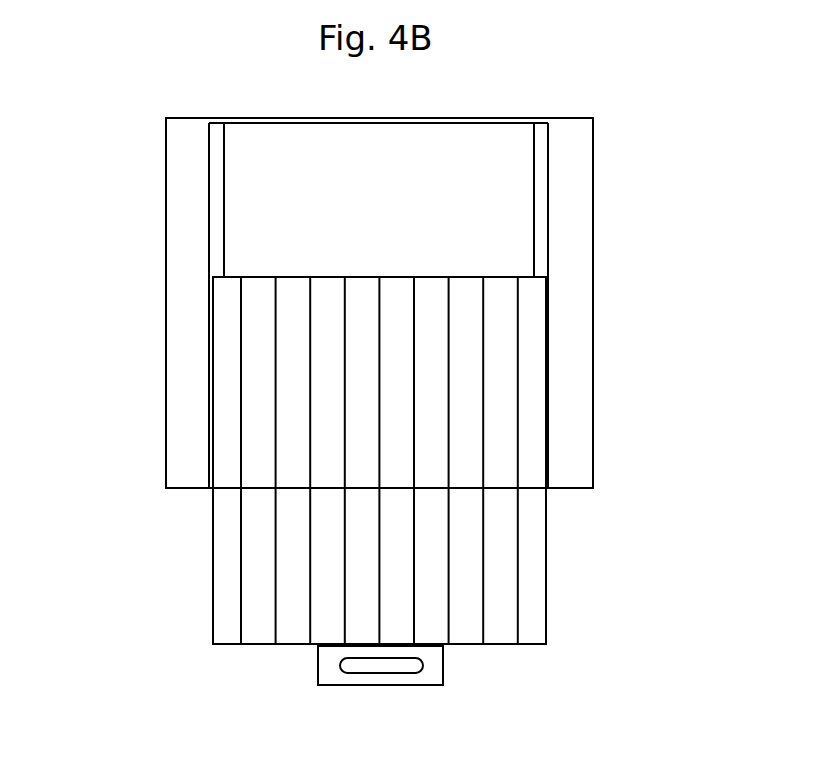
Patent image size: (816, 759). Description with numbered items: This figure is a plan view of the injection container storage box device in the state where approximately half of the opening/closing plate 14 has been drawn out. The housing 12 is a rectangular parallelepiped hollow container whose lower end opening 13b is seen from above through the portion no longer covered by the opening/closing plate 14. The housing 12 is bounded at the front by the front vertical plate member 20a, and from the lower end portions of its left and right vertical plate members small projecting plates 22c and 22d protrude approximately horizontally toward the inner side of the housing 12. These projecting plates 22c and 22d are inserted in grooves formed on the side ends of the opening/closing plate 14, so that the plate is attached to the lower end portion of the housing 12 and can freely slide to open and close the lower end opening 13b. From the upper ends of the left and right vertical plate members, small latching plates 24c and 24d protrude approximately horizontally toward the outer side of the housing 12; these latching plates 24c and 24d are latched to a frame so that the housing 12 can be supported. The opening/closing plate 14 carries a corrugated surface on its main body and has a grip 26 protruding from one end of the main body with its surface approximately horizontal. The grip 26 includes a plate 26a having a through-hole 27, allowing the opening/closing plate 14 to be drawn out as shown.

The housing 12 is at (256, 118).
The lower end opening 13b is at (447, 183).
The opening/closing plate 14 is at (548, 597).
The front vertical plate member 20a is at (502, 490).
The projecting plate 22c is at (217, 202).
The projecting plate 22d is at (543, 190).
The latching plate 24c is at (177, 303).
The latching plate 24d is at (590, 325).
The grip 26 is at (312, 665).
The plate 26a is at (432, 675).
The through-hole 27 is at (358, 670).